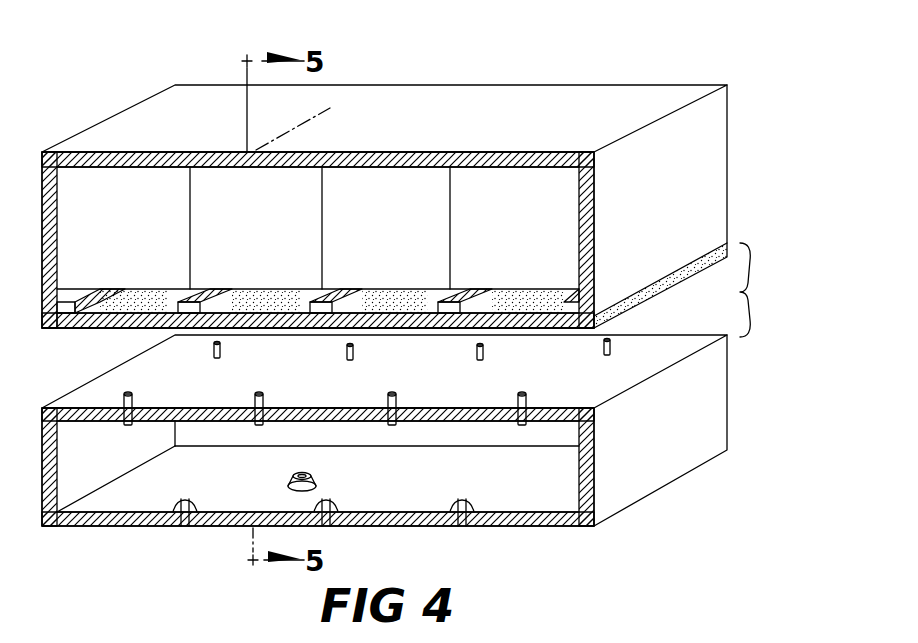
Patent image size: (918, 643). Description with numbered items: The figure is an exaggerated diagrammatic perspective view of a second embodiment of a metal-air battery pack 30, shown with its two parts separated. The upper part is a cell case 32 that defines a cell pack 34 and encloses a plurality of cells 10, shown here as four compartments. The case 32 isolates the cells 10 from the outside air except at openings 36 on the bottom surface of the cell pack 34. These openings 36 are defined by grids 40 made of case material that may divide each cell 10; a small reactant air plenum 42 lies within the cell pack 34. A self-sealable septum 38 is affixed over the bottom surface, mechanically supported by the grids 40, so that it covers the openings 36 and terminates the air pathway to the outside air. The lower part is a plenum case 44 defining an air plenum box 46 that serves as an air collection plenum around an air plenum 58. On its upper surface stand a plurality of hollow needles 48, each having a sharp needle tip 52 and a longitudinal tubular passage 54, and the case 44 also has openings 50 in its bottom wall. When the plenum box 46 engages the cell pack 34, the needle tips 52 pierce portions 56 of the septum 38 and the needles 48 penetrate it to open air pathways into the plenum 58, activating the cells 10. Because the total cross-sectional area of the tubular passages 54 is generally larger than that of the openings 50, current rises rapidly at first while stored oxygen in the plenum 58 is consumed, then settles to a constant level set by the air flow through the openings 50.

The cell 10 is at (138, 212).
The battery pack 30 is at (763, 290).
The cell case 32 is at (697, 168).
The cell pack 34 is at (147, 82).
The opening 36 is at (128, 300).
The septum 38 is at (45, 329).
The grid 40 is at (200, 300).
The reactant air plenum 42 is at (168, 298).
The plenum case 44 is at (684, 450).
The air plenum box 46 is at (658, 504).
The hollow needle 48 is at (256, 402).
The opening 50 is at (310, 474).
The needle tip 52 is at (129, 393).
The tubular passage 54 is at (128, 426).
The portion of the septum 56 is at (136, 332).
The air plenum 58 is at (434, 489).